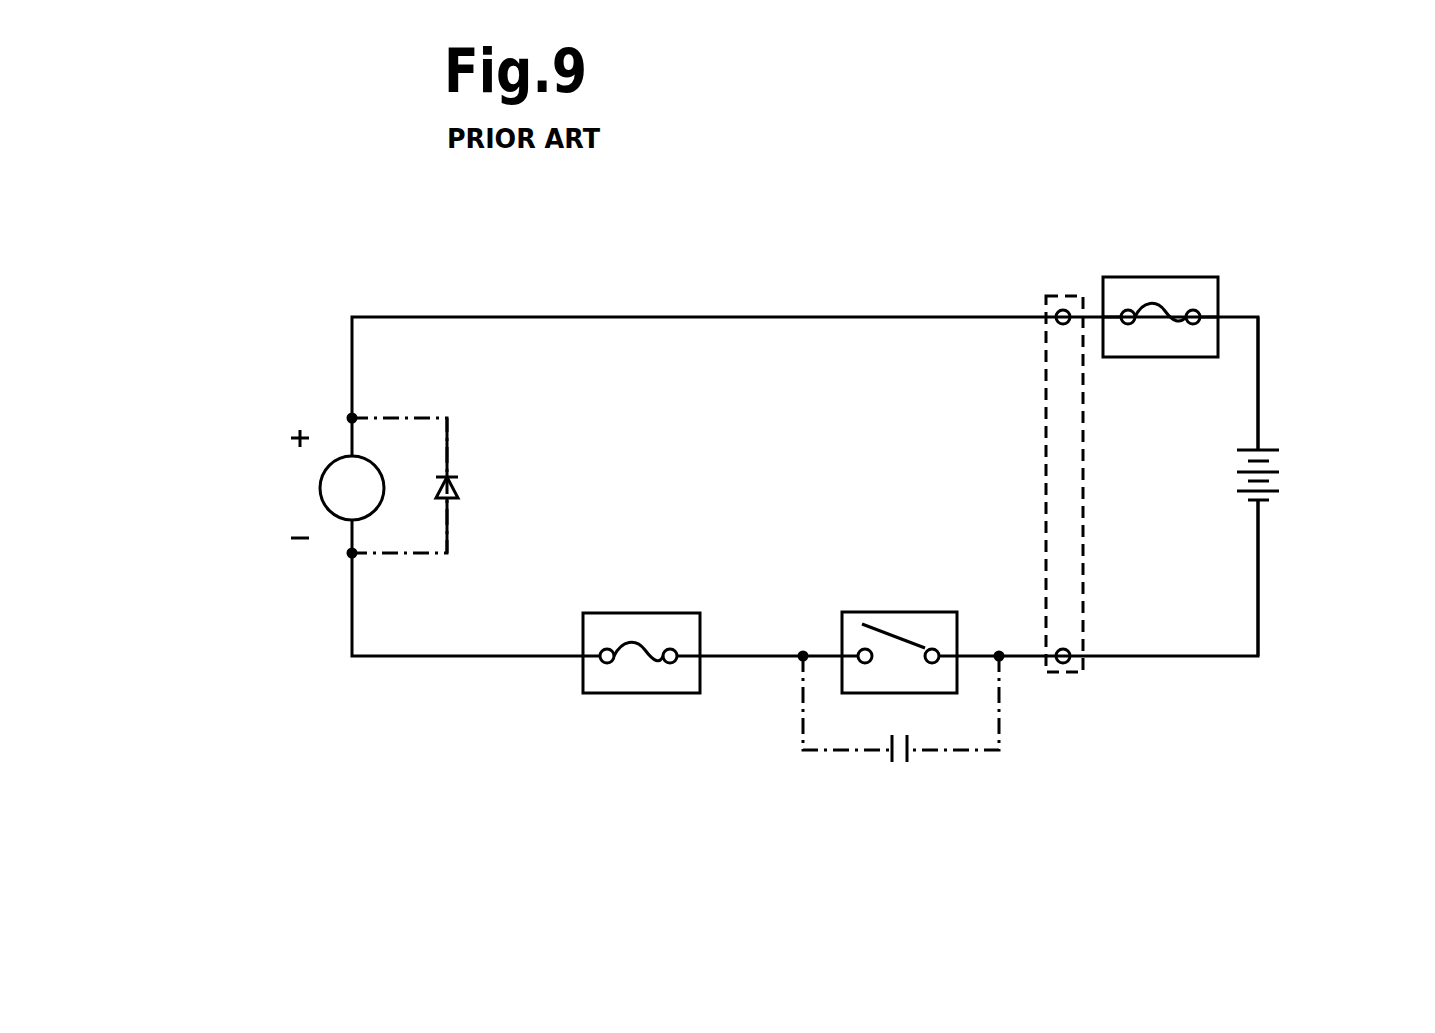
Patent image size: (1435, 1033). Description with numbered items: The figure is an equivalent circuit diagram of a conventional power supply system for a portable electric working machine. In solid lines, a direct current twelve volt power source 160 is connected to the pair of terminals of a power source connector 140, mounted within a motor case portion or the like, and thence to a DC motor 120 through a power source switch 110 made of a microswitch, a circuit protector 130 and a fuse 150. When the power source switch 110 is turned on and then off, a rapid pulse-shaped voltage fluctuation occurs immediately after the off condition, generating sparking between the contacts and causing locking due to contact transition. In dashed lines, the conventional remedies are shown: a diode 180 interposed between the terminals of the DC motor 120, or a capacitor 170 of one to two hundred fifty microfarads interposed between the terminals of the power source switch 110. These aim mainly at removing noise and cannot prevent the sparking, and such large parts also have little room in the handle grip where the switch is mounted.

The power source switch 110 is at (892, 612).
The DC motor 120 is at (320, 490).
The circuit protector 130 is at (652, 613).
The power source connector 140 is at (1046, 472).
The fuse 150 is at (1168, 277).
The power source 160 is at (1270, 473).
The capacitor 170 is at (907, 755).
The diode 180 is at (460, 490).